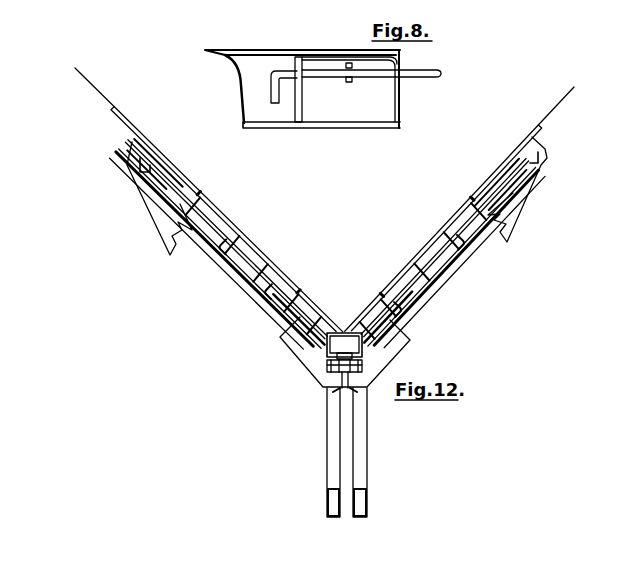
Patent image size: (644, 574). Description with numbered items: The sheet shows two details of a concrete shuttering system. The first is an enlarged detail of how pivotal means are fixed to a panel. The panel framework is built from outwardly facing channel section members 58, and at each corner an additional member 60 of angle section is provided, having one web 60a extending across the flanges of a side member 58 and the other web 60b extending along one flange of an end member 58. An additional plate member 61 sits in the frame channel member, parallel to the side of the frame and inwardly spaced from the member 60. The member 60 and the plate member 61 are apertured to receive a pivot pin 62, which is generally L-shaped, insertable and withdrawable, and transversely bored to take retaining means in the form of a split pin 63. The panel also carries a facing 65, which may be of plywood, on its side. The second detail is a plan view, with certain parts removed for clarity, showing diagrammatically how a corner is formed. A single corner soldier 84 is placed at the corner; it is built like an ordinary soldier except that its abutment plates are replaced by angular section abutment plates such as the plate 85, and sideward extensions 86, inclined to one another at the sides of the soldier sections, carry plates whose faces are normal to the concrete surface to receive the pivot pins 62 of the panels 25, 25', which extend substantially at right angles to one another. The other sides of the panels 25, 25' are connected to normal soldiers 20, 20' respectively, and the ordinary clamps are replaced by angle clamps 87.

In FIG. 8, the channel section member 58 is at (262, 50).
In FIG. 8, the additional member of angle section 60 is at (397, 65).
In FIG. 8, the web of angle member 60a is at (395, 107).
In FIG. 8, the web of angle member 60b is at (362, 54).
In FIG. 8, the additional plate member 61 is at (298, 103).
In FIG. 8, the pivot pin 62 is at (438, 70).
In FIG. 12, the pivot pin 62 is at (302, 317).
In FIG. 8, the split pin 63 is at (340, 83).
In FIG. 8, the facing 65 is at (320, 126).
In FIG. 12, the soldier 20 is at (524, 189).
In FIG. 12, the soldier 20' is at (146, 198).
In FIG. 12, the panel 25 is at (474, 223).
In FIG. 12, the panel 25' is at (195, 214).
In FIG. 12, the corner soldier 84 is at (367, 436).
In FIG. 12, the angular section abutment plate 85 is at (345, 330).
In FIG. 12, the sideward extension 86 is at (303, 348).
In FIG. 12, the angle clamp 87 is at (310, 366).